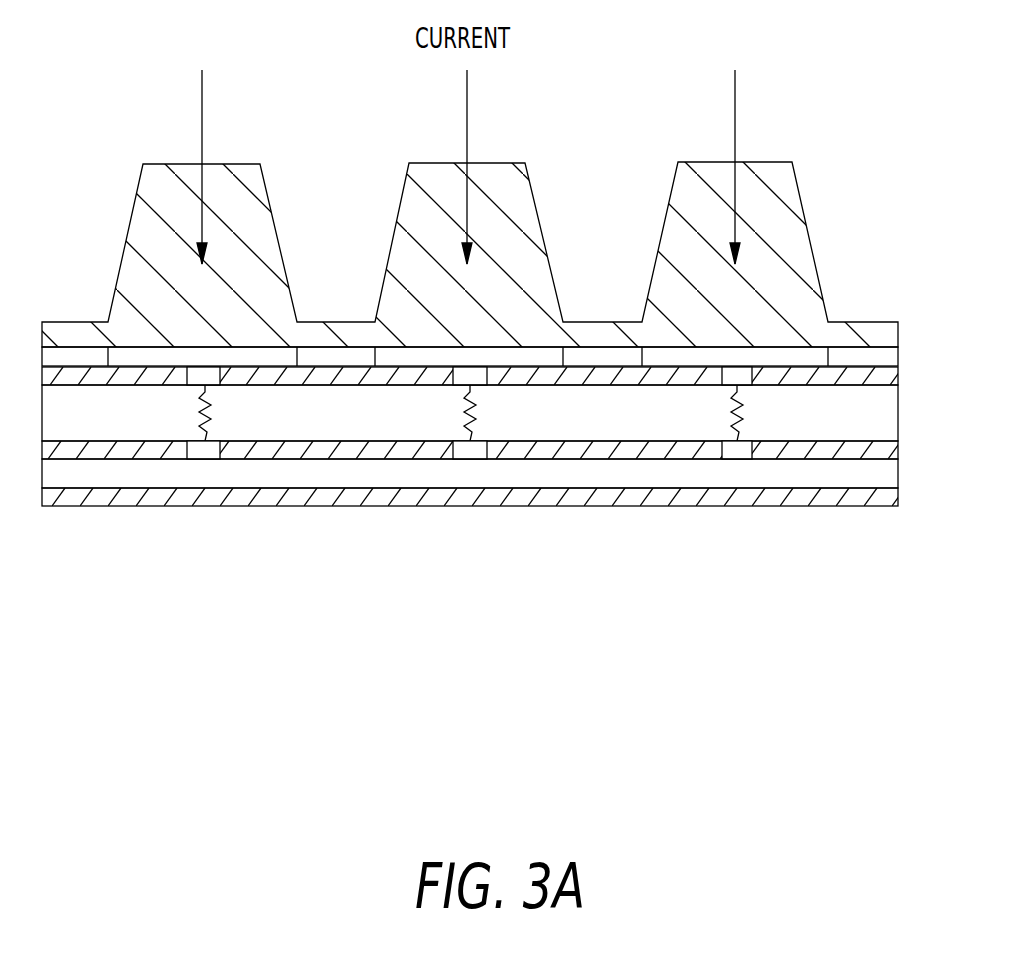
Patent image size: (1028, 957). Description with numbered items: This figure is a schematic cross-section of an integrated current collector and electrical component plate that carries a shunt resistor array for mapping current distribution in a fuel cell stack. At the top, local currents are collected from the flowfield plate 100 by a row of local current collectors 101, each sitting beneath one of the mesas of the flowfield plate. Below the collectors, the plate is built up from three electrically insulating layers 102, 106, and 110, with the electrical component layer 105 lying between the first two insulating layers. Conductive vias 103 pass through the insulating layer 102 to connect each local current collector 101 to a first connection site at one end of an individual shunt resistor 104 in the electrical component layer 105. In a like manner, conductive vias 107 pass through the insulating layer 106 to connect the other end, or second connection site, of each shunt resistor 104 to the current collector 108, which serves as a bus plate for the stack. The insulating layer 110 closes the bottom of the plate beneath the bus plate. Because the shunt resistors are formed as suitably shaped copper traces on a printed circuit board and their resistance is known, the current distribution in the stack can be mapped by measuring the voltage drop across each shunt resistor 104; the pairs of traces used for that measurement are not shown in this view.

The flowfield plate 100 is at (800, 249).
The local current collectors 101 is at (145, 358).
The electrically insulating layer 102 is at (888, 373).
The conductive vias 103 is at (210, 377).
The shunt resistors 104 is at (202, 414).
The electrical component layer 105 is at (883, 395).
The electrically insulating layer 106 is at (880, 441).
The conductive vias 107 is at (207, 452).
The current collector 108 is at (684, 462).
The electrically insulating layer 110 is at (160, 497).